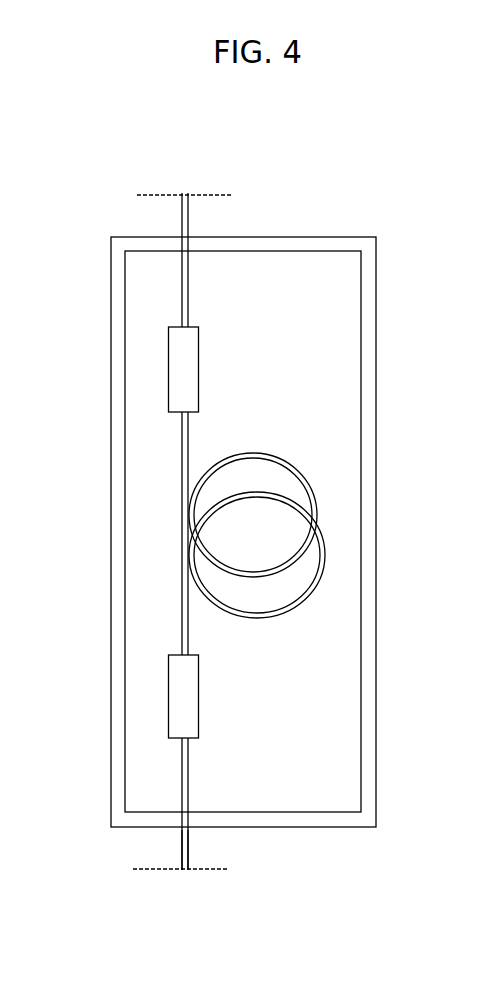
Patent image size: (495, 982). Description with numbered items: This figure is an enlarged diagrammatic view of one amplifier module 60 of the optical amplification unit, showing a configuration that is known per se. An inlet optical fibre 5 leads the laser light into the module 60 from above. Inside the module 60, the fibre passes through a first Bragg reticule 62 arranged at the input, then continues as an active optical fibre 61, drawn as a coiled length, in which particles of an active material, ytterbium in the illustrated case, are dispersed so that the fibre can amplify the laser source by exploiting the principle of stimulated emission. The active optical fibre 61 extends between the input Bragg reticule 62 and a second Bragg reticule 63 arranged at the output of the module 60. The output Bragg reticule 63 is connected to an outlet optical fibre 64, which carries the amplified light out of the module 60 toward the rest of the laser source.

The optical fibre 5 is at (180, 217).
The amplifier module 60 is at (420, 345).
The active optical fibre 61 is at (238, 495).
The Bragg reticule 62 is at (187, 350).
The Bragg reticule 63 is at (187, 678).
The outlet optical fibre 64 is at (180, 843).